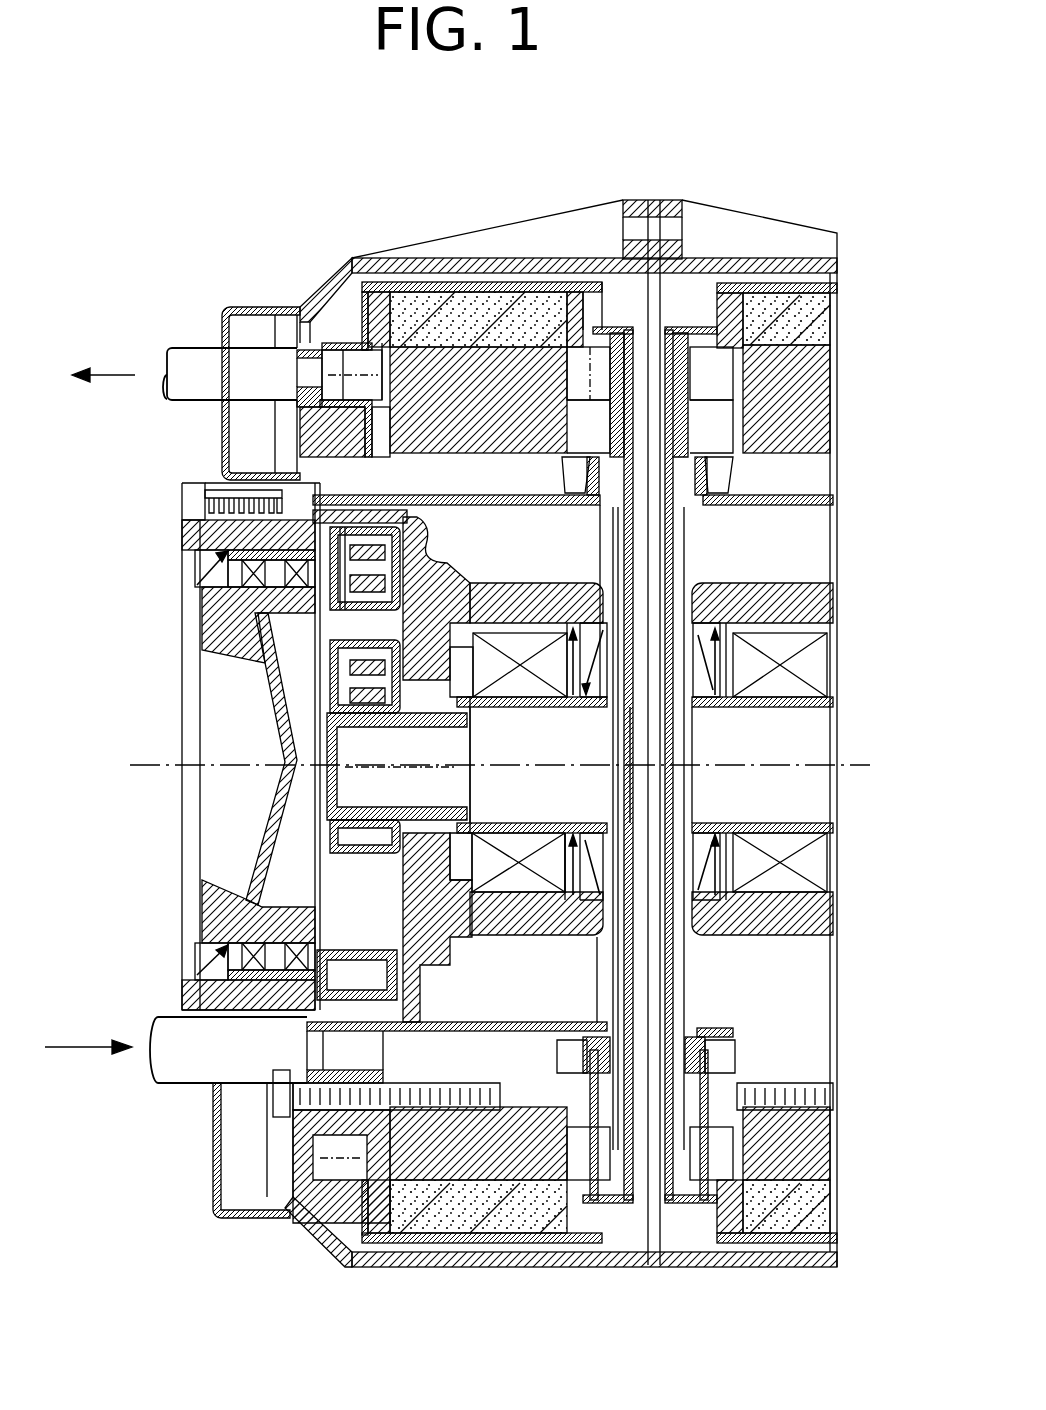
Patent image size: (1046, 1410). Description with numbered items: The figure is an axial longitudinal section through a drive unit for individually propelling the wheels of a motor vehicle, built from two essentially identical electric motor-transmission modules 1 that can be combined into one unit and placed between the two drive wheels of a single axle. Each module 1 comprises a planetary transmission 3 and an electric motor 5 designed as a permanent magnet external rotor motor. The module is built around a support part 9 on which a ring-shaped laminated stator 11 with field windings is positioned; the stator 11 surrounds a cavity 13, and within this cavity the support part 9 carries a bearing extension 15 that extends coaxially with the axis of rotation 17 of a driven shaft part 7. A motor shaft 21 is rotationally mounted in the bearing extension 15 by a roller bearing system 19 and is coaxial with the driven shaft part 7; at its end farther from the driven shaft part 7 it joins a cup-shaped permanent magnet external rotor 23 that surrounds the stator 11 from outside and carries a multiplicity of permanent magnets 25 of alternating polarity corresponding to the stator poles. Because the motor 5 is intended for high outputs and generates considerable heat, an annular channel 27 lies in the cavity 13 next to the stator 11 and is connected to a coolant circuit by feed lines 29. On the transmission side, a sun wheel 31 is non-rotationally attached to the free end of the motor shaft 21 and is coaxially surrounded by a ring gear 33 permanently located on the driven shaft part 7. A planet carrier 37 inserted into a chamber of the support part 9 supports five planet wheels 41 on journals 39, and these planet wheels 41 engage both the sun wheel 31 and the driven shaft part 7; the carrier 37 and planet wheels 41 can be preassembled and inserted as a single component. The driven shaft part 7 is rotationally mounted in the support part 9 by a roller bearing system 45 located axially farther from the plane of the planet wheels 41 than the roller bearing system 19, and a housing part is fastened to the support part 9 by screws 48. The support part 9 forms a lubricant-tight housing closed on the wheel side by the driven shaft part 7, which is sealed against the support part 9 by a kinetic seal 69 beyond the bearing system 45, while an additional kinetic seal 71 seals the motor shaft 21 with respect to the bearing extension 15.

The electric motor-transmission module 1 is at (390, 232).
The planetary transmission 3 is at (160, 508).
The electric motor 5 is at (505, 1267).
The driven shaft part 7 is at (315, 640).
The support part 9 is at (315, 310).
The stator 11 is at (450, 348).
The cavity 13 is at (536, 565).
The bearing extension 15 is at (548, 612).
The axis of rotation 17 is at (150, 770).
The roller bearing system 19 is at (510, 880).
The motor shaft 21 is at (315, 800).
The permanent magnet external rotor 23 is at (608, 318).
The permanent magnets 25 is at (518, 318).
The annular channel 27 is at (548, 1048).
The feed lines 29 is at (193, 367).
The sun wheel 31 is at (345, 830).
The ring gear 33 is at (313, 940).
The planet carrier 37 is at (417, 560).
The journals 39 is at (345, 600).
The planet wheels 41 is at (285, 690).
The roller bearing system 45 is at (233, 578).
The screws 48 is at (218, 490).
The kinetic seal 69 is at (193, 565).
The kinetic seal 71 is at (590, 888).